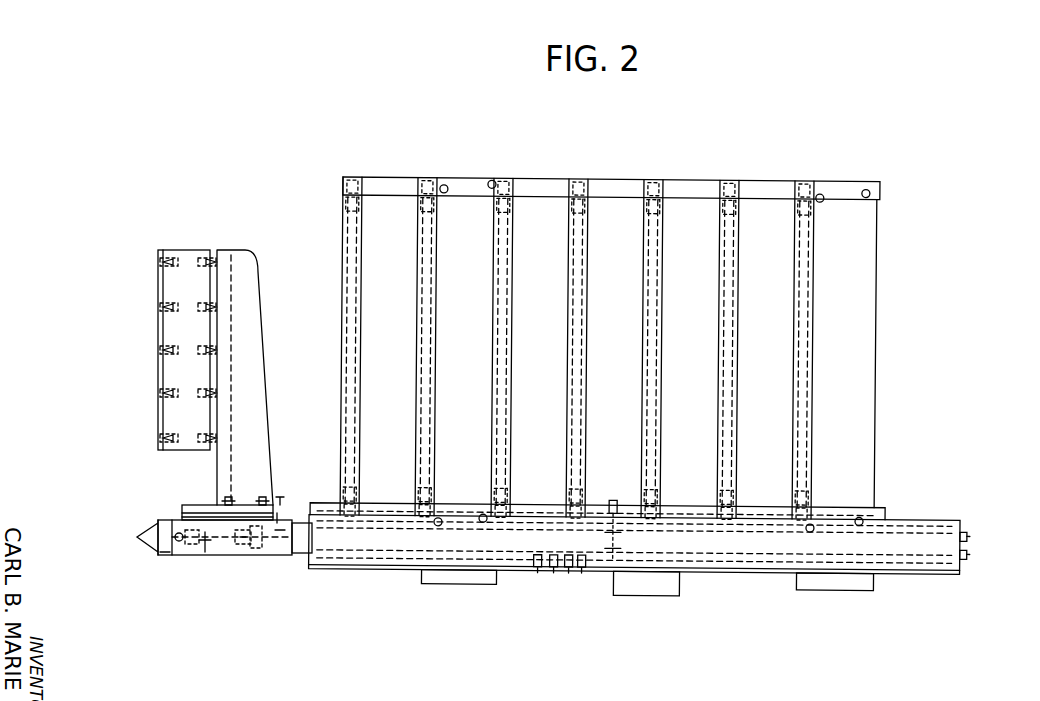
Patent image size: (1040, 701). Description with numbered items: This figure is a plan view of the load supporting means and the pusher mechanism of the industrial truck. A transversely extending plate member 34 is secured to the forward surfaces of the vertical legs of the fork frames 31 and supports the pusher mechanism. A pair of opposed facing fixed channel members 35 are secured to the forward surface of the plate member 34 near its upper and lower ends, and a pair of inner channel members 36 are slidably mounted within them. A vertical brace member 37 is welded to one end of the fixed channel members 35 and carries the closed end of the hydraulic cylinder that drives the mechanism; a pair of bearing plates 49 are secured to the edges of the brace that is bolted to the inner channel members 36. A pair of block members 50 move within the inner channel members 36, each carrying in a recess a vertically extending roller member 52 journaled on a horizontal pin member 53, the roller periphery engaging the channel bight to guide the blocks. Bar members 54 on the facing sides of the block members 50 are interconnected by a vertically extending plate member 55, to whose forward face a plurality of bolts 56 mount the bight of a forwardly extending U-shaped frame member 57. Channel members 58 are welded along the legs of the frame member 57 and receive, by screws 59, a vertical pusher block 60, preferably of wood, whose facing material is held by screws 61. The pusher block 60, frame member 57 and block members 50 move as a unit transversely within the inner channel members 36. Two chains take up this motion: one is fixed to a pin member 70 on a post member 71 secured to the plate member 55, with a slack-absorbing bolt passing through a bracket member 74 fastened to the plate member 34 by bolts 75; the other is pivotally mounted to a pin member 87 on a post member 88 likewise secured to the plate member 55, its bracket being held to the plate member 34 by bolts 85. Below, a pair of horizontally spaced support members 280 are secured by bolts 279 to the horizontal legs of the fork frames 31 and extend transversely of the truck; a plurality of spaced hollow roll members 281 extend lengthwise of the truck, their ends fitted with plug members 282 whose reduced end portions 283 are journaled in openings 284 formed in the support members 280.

The fork frames 31 is at (456, 323).
The plate member 34 is at (750, 571).
The channel members 35 is at (352, 550).
The channel members 36 is at (283, 551).
The vertical brace member 37 is at (972, 541).
The bearing plates 49 is at (157, 553).
The block members 50 is at (209, 504).
The roller member 52 is at (160, 556).
The horizontal pin member 53 is at (186, 553).
The bar members 54 is at (278, 516).
The plate member 55 is at (182, 506).
The bolts 56 is at (263, 496).
The U-shaped frame member 57 is at (258, 441).
The channel members 58 is at (229, 254).
The screws 59 is at (216, 262).
The pusher block 60 is at (189, 255).
The screws 61 is at (157, 252).
The pin member 70 is at (240, 553).
The post member 71 is at (282, 496).
The bracket member 74 is at (620, 546).
The bolts 75 is at (587, 571).
The bolts 85 is at (556, 571).
The pin member 87 is at (206, 553).
The post member 88 is at (182, 515).
The bolts 279 is at (490, 187).
The support members 280 is at (862, 192).
The hollow roll members 281 is at (431, 392).
The plug members 282 is at (418, 208).
The reduced end portions 283 is at (420, 190).
The openings 284 is at (351, 177).